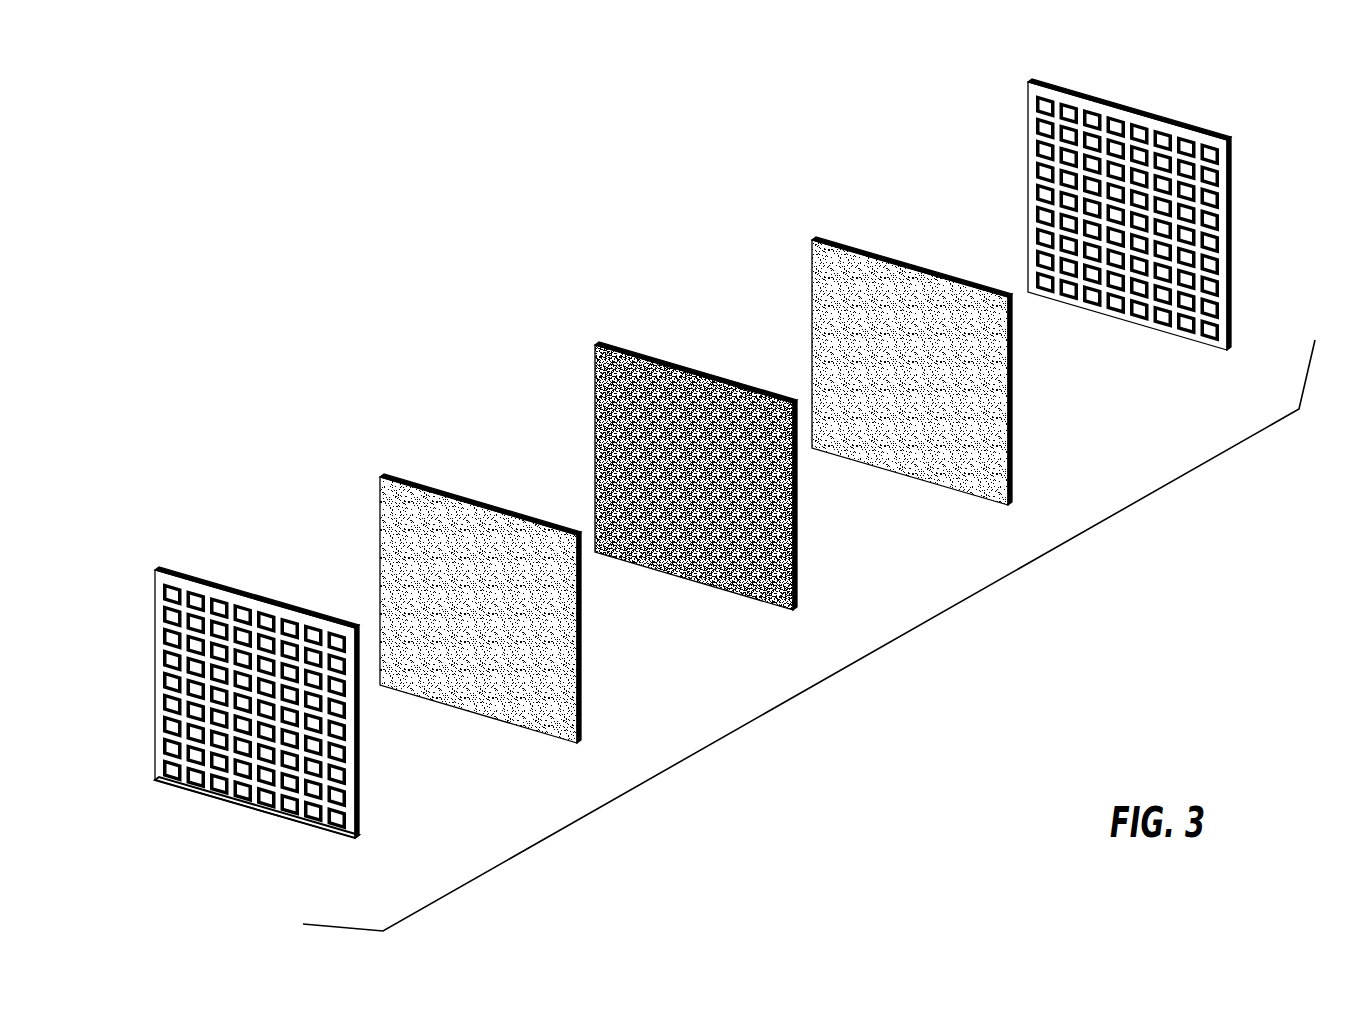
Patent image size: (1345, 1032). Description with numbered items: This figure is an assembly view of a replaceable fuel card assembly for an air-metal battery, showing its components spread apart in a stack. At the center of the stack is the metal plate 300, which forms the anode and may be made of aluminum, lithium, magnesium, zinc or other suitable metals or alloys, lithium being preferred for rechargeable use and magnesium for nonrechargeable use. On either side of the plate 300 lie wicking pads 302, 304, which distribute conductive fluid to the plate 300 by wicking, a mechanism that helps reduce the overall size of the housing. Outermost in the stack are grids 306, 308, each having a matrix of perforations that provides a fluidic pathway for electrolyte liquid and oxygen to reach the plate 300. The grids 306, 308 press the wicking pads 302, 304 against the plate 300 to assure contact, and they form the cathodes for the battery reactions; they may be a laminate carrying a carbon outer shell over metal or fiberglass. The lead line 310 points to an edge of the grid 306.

The metal plate 300 is at (633, 385).
The wicking pad 302 is at (425, 480).
The wicking pad 304 is at (863, 277).
The grid 306 is at (242, 593).
The grid 308 is at (1093, 98).
The frame edge of grid layer 310 is at (357, 795).